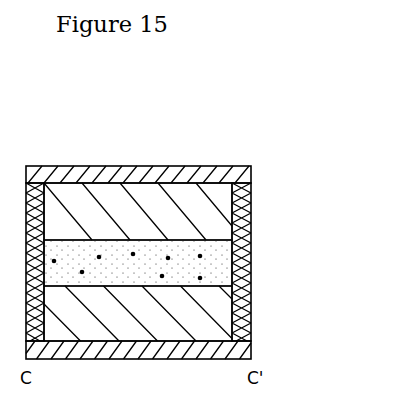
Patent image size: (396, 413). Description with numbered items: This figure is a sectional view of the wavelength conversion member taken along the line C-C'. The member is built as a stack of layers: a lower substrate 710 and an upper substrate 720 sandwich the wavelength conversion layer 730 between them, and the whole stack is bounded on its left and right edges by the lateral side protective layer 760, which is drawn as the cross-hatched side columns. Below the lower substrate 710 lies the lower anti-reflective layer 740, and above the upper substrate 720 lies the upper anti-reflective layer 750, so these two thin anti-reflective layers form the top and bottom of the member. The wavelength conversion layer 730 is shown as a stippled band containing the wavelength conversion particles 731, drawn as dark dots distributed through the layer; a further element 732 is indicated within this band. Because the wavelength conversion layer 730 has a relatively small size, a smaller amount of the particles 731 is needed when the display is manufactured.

The lower substrate 710 is at (217, 308).
The upper substrate 720 is at (217, 210).
The wavelength conversion layer 730 is at (201, 263).
The wavelength conversion particles 731 is at (218, 268).
The particles 732 is at (200, 256).
The lower anti-reflective layer 740 is at (250, 349).
The upper anti-reflective layer 750 is at (251, 173).
The lateral side protective layer 760 is at (234, 230).